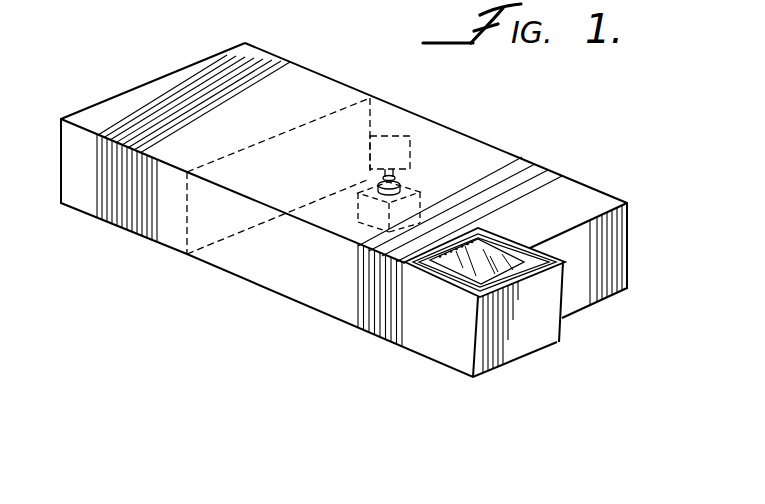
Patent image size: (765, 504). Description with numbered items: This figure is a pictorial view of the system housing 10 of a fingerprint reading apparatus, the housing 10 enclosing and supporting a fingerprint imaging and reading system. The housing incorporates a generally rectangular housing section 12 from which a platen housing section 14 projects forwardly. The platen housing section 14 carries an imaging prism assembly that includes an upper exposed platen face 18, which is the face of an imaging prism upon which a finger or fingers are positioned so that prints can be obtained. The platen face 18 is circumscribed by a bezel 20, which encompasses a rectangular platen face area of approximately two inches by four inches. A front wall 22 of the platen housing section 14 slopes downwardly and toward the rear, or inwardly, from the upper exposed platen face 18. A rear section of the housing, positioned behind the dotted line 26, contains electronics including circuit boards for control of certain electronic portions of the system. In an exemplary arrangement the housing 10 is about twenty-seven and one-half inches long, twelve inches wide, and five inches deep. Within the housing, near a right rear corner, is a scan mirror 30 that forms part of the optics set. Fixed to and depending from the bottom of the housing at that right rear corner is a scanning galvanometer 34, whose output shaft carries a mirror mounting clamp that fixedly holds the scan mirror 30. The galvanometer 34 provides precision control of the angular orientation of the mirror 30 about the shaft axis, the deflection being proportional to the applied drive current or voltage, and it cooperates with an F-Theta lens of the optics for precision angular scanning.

The housing 10 is at (264, 312).
The rectangular housing section 12 is at (568, 178).
The platen housing section 14 is at (462, 343).
The platen face 18 is at (493, 268).
The bezel 20 is at (497, 242).
The front wall 22 is at (538, 338).
The dotted line 26 is at (323, 112).
The scan mirror 30 is at (413, 137).
The scanning galvanometer 34 is at (418, 189).